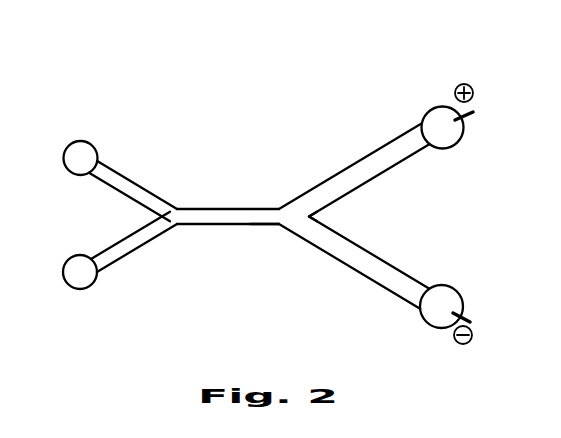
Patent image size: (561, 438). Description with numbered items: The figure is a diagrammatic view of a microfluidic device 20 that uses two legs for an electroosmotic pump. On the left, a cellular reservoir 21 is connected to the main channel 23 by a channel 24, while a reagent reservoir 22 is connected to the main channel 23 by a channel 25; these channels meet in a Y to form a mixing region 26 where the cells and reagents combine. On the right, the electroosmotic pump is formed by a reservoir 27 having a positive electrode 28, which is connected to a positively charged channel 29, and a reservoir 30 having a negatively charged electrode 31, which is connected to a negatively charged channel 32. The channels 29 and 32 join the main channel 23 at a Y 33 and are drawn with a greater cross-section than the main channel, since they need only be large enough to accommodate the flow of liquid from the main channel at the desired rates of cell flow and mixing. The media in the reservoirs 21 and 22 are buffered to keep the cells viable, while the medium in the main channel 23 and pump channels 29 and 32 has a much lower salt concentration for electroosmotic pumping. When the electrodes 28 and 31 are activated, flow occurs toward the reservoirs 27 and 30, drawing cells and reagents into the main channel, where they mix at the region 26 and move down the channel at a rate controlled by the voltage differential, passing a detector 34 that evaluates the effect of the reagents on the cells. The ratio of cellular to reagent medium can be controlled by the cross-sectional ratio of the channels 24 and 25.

The device 20 is at (497, 85).
The cellular reservoir 21 is at (64, 277).
The reagent reservoir 22 is at (68, 153).
The main channel 23 is at (223, 213).
The channel 24 is at (134, 248).
The channel 25 is at (132, 183).
The mixing region 26 is at (177, 208).
The reservoir 27 is at (457, 138).
The positive electrode 28 is at (474, 115).
The positively charged channel 29 is at (353, 172).
The reservoir 30 is at (453, 302).
The negatively charged electrode 31 is at (472, 317).
The negatively charged channel 32 is at (353, 262).
The Y 33 is at (321, 215).
The detector 34 is at (264, 234).